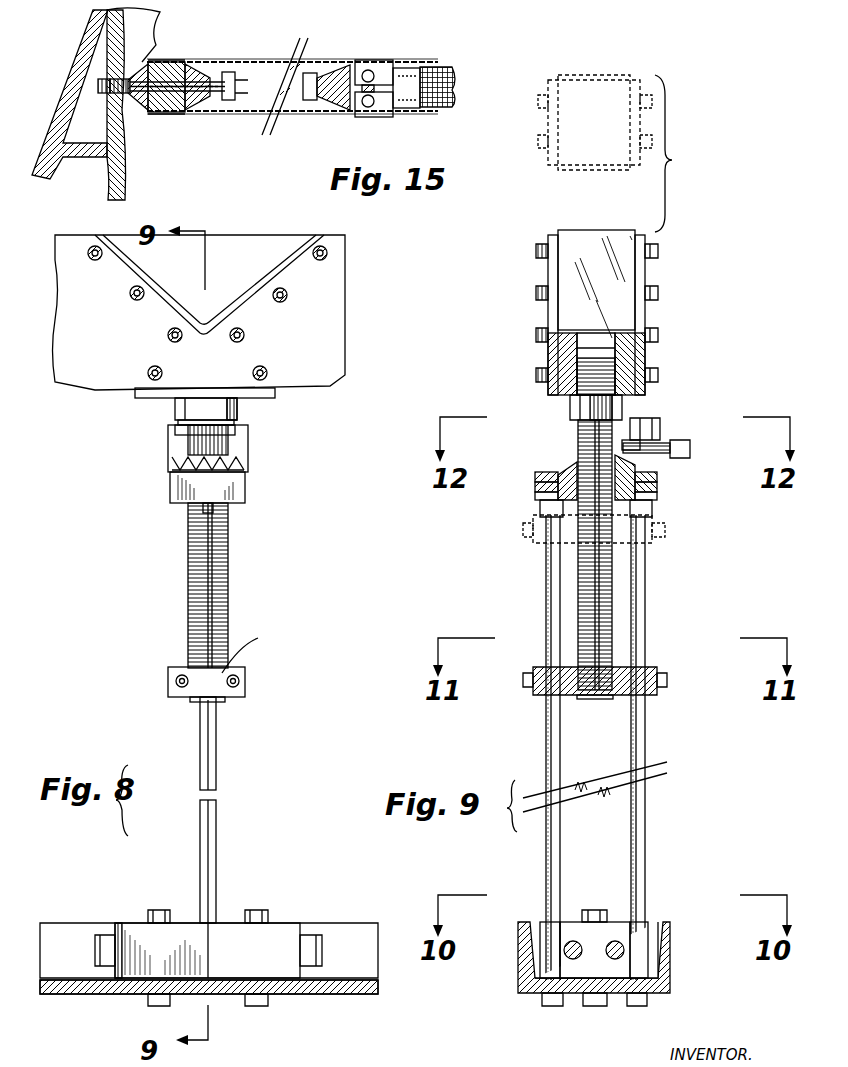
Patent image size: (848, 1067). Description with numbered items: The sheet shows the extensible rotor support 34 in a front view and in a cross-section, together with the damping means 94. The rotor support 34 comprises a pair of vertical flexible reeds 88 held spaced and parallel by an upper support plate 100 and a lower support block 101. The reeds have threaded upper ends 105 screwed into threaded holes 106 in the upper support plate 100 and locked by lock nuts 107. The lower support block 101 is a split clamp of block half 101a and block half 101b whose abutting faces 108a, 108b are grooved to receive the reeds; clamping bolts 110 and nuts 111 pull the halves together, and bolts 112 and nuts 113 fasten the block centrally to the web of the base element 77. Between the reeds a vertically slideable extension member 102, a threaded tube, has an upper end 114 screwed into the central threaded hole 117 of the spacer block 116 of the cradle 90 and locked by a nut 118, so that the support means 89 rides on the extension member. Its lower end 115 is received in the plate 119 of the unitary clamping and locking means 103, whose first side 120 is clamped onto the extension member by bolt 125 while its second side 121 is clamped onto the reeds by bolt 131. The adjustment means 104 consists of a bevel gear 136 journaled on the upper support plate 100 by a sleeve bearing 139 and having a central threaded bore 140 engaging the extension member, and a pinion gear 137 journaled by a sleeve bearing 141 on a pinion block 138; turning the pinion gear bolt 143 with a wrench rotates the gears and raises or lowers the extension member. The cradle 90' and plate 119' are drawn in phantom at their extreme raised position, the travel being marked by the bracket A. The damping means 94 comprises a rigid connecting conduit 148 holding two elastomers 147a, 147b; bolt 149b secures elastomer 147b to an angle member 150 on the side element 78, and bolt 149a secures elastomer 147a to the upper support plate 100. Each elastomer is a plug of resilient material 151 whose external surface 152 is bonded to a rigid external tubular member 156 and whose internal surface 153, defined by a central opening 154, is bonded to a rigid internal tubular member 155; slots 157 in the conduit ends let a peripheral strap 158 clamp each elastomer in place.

In FIG. 15, the side element 78 is at (80, 58).
In FIG. 15, the angle member 150 is at (95, 152).
In FIG. 15, the internal surface 153 is at (138, 98).
In FIG. 15, the external surface 152 is at (170, 62).
In FIG. 15, the central opening 154 is at (160, 60).
In FIG. 15, the rigid internal tubular member 155 is at (230, 72).
In FIG. 15, the rigid connecting conduit 148 is at (238, 60).
In FIG. 15, the bolt 149b is at (235, 62).
In FIG. 15, the bolt 149a is at (310, 73).
In FIG. 15, the plug of resilient material 151 is at (220, 98).
In FIG. 15, the rigid external tubular member 156 is at (193, 100).
In FIG. 15, the peripheral strap 158 is at (368, 60).
In FIG. 15, the slots 157 is at (400, 68).
In FIG. 15, the elastomer 147a is at (340, 110).
In FIG. 15, the elastomer 147b is at (240, 115).
In FIG. 15, the upper support plate 100 is at (445, 67).
In FIG. 8, the upper support plate 100 is at (237, 490).
In FIG. 9, the upper support plate 100 is at (540, 497).
In FIG. 15, the damping means 94 is at (460, 50).
In FIG. 15, the cradle 90' is at (595, 106).
In FIG. 15, the length of adjustment A is at (678, 153).
In FIG. 8, the support means 89 is at (226, 268).
In FIG. 9, the support means 89 is at (648, 280).
In FIG. 8, the cradle 90 is at (244, 307).
In FIG. 9, the cradle 90 is at (563, 284).
In FIG. 8, the spacer block 116 is at (275, 393).
In FIG. 9, the spacer block 116 is at (563, 355).
In FIG. 8, the nut 118 is at (233, 410).
In FIG. 9, the nut 118 is at (575, 403).
In FIG. 8, the adjustment means 104 is at (268, 450).
In FIG. 9, the adjustment means 104 is at (490, 525).
In FIG. 8, the pinion block 138 is at (172, 430).
In FIG. 9, the pinion block 138 is at (652, 418).
In FIG. 8, the pinion gear 137 is at (188, 452).
In FIG. 9, the pinion gear 137 is at (618, 440).
In FIG. 8, the bevel gear 136 is at (172, 465).
In FIG. 9, the bevel gear 136 is at (565, 470).
In FIG. 8, the lock nuts 107 is at (213, 510).
In FIG. 9, the lock nuts 107 is at (548, 508).
In FIG. 8, the extensible rotor support 34 is at (165, 556).
In FIG. 9, the extensible rotor support 34 is at (525, 571).
In FIG. 8, the vertically slideable extension member 102 is at (235, 580).
In FIG. 9, the vertically slideable extension member 102 is at (600, 590).
In FIG. 8, the unitary clamping and locking means 103 is at (258, 668).
In FIG. 9, the unitary clamping and locking means 103 is at (528, 700).
In FIG. 8, the first side 120 is at (170, 672).
In FIG. 8, the bolt 125 is at (178, 683).
In FIG. 8, the second side 121 is at (245, 686).
In FIG. 8, the plate 119 is at (253, 650).
In FIG. 9, the plate 119 is at (612, 669).
In FIG. 8, the bolt 131 is at (233, 685).
In FIG. 8, the vertical flexible reeds 88 is at (214, 760).
In FIG. 9, the vertical flexible reeds 88 is at (632, 823).
In FIG. 8, the lower support block 101 is at (226, 890).
In FIG. 9, the lower support block 101 is at (650, 900).
In FIG. 8, the block half 101a is at (282, 923).
In FIG. 8, the block half 101b is at (120, 925).
In FIG. 9, the block half 101b is at (540, 928).
In FIG. 8, the base element 77 is at (355, 925).
In FIG. 9, the base element 77 is at (662, 985).
In FIG. 8, the clamping bolts 110 is at (100, 950).
In FIG. 8, the nuts 111 is at (322, 952).
In FIG. 8, the bolts 112 is at (165, 910).
In FIG. 9, the bolts 112 is at (625, 912).
In FIG. 8, the nuts 113 is at (152, 1000).
In FIG. 9, the nuts 113 is at (548, 1000).
In FIG. 8, the abutting face 108a is at (205, 968).
In FIG. 8, the abutting face 108b is at (210, 935).
In FIG. 9, the abutting face 108b is at (575, 965).
In FIG. 9, the upper end 114 is at (600, 355).
In FIG. 9, the central threaded hole 117 is at (573, 370).
In FIG. 9, the central threaded bore 140 is at (570, 460).
In FIG. 9, the sleeve bearing 139 is at (560, 478).
In FIG. 9, the threaded upper ends 105 is at (538, 478).
In FIG. 9, the threaded holes 106 is at (540, 488).
In FIG. 9, the sleeve bearing 141 is at (640, 460).
In FIG. 9, the pinion gear bolt 143 is at (665, 443).
In FIG. 9, the plate 119' is at (622, 540).
In FIG. 9, the lower end 115 is at (595, 699).